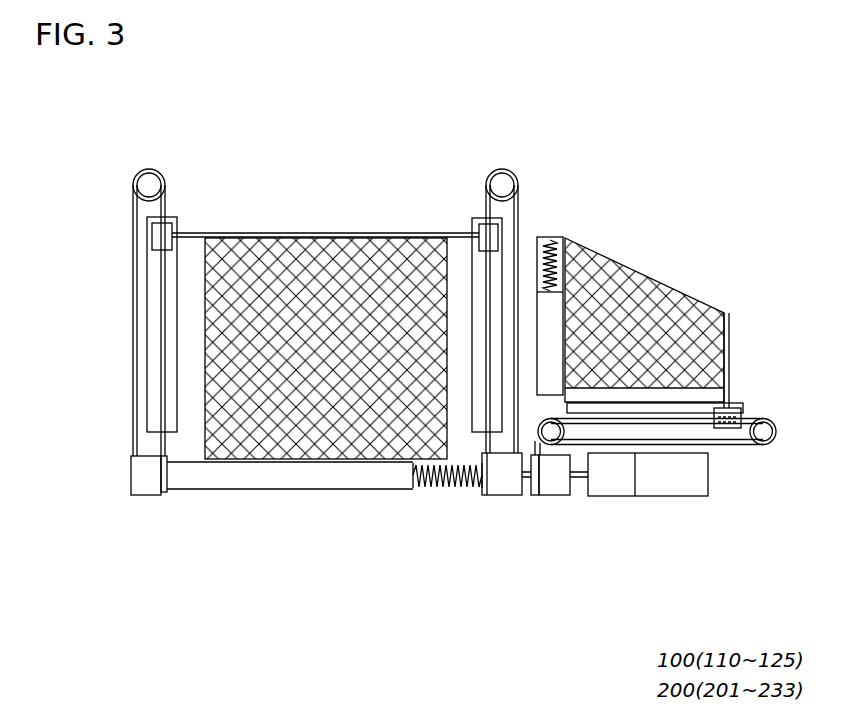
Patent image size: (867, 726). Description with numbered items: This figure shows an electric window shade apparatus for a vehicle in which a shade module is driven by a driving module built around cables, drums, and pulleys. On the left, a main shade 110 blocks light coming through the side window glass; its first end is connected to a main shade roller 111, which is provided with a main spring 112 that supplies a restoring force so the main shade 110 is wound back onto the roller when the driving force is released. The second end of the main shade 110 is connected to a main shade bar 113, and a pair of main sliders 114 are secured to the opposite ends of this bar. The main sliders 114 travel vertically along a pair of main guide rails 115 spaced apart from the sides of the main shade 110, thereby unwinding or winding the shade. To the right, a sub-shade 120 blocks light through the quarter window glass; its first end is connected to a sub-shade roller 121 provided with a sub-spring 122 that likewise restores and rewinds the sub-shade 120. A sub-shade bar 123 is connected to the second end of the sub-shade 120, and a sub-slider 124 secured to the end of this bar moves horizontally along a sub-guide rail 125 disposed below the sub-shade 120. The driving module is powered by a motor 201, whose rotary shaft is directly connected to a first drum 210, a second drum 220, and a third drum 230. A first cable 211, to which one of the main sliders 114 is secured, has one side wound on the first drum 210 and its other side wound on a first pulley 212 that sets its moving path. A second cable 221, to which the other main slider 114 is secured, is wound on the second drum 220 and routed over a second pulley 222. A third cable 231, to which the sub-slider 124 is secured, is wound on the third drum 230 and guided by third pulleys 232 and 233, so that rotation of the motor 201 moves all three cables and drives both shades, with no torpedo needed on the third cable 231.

The main shade 110 is at (293, 245).
The main shade roller 111 is at (278, 481).
The main spring 112 is at (432, 500).
The main shade bar 113 is at (345, 238).
The main sliders 114 is at (158, 237).
The main guide rails 115 is at (155, 428).
The sub-shade 120 is at (662, 303).
The sub-shade roller 121 is at (555, 316).
The sub-spring 122 is at (560, 236).
The sub-shade bar 123 is at (729, 333).
The sub-slider 124 is at (737, 417).
The sub-guide rail 125 is at (738, 403).
The motor 201 is at (650, 497).
The first drum 210 is at (146, 490).
The first cable 211 is at (135, 329).
The first pulley 212 is at (149, 169).
The second drum 220 is at (503, 497).
The second cable 221 is at (517, 205).
The second pulley 222 is at (502, 169).
The third drum 230 is at (554, 497).
The third cable 231 is at (735, 447).
The third pulley 232 is at (570, 425).
The third pulley 233 is at (776, 423).